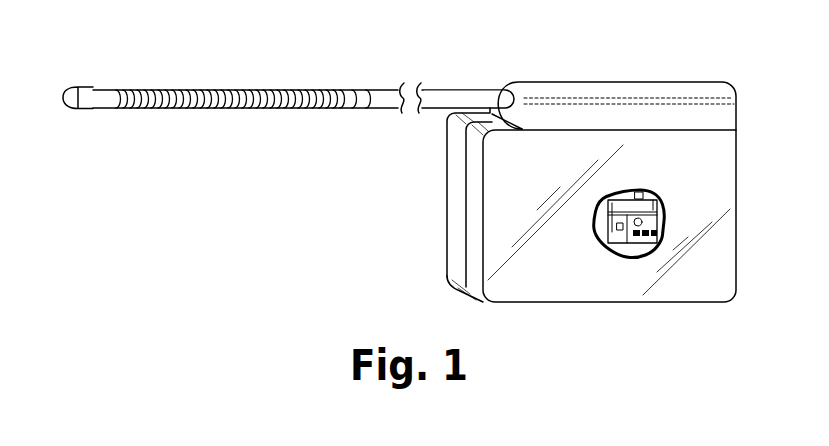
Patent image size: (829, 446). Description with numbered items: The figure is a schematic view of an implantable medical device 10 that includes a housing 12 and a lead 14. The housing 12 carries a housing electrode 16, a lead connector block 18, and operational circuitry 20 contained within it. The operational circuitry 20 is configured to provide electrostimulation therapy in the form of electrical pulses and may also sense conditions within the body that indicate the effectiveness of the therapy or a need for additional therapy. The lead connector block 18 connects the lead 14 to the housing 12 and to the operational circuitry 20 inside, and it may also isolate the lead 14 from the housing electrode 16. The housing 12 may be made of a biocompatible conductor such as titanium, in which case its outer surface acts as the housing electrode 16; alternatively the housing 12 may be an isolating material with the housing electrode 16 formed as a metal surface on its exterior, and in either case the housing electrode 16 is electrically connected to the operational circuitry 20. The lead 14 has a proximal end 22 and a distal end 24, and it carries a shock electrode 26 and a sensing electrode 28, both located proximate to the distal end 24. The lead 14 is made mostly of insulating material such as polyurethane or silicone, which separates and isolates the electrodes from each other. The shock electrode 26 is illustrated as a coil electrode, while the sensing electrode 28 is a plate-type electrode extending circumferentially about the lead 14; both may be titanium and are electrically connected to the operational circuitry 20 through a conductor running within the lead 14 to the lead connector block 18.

The implantable medical device 10 is at (224, 215).
The housing 12 is at (439, 232).
The lead 14 is at (201, 78).
The housing electrode 16 is at (629, 293).
The lead connector block 18 is at (647, 80).
The operational circuitry 20 is at (596, 233).
The proximal end 22 is at (458, 89).
The distal end 24 is at (76, 110).
The shock electrode 26 is at (219, 109).
The sensing electrode 28 is at (365, 109).